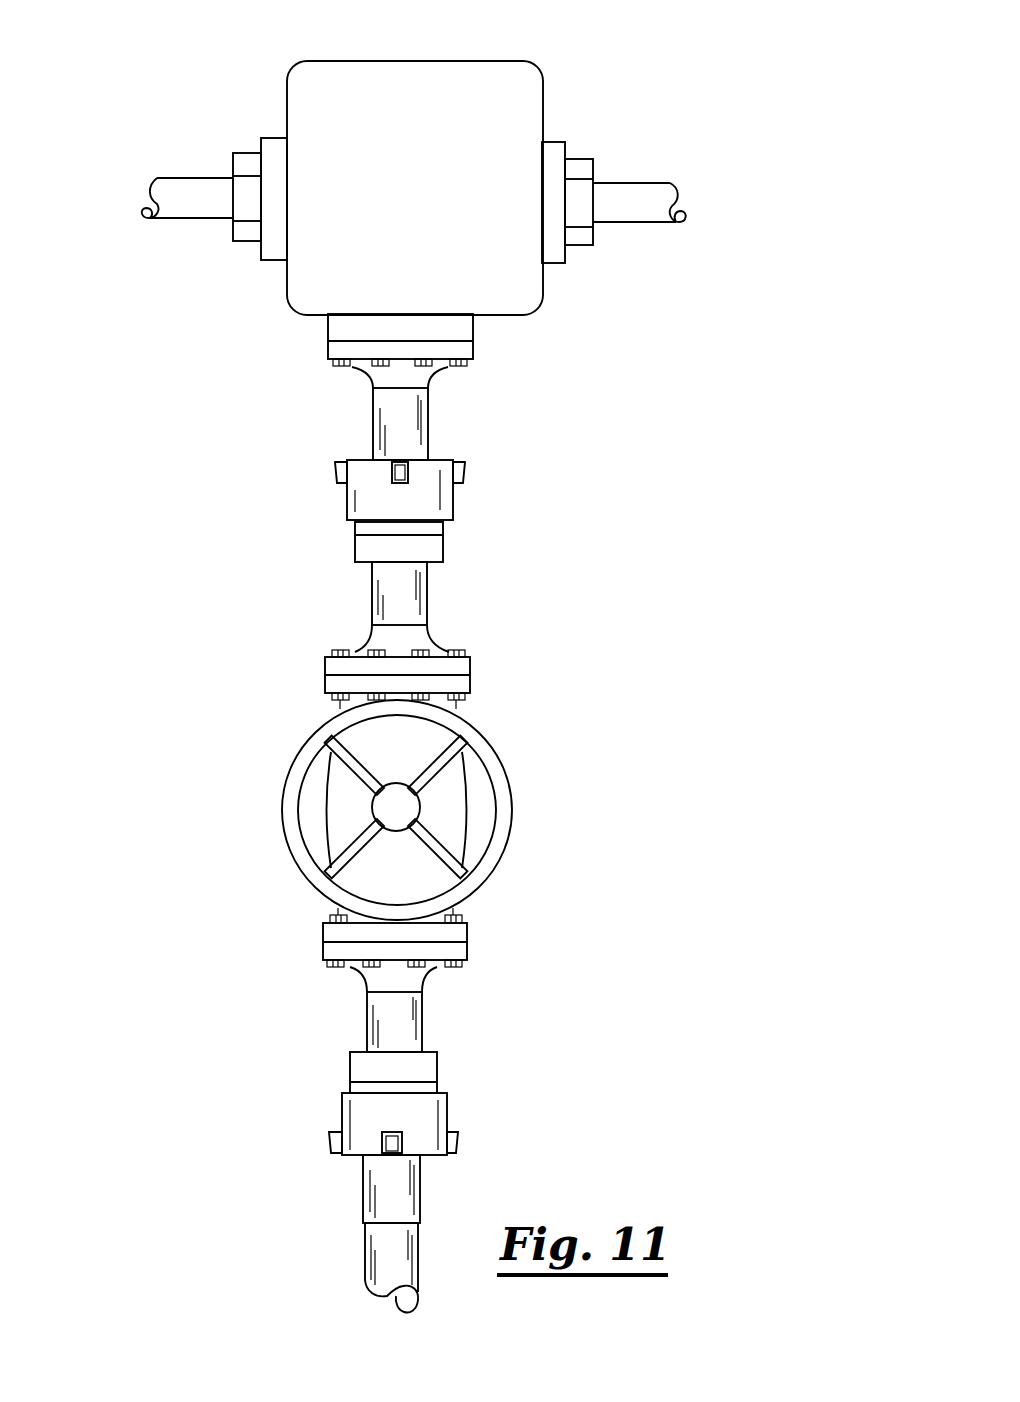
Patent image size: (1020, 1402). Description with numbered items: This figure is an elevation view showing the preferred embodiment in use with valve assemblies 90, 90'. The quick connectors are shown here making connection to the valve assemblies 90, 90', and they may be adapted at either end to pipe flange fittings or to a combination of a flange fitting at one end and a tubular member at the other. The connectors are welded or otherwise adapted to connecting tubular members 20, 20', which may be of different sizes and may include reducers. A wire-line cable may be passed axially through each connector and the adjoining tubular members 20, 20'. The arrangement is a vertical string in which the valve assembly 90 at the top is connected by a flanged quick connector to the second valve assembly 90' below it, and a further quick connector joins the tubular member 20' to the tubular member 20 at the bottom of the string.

The valve assembly 90 is at (421, 166).
The valve assembly 90' is at (475, 766).
The tubular member 20' is at (457, 1015).
The tubular member 20 is at (345, 1268).